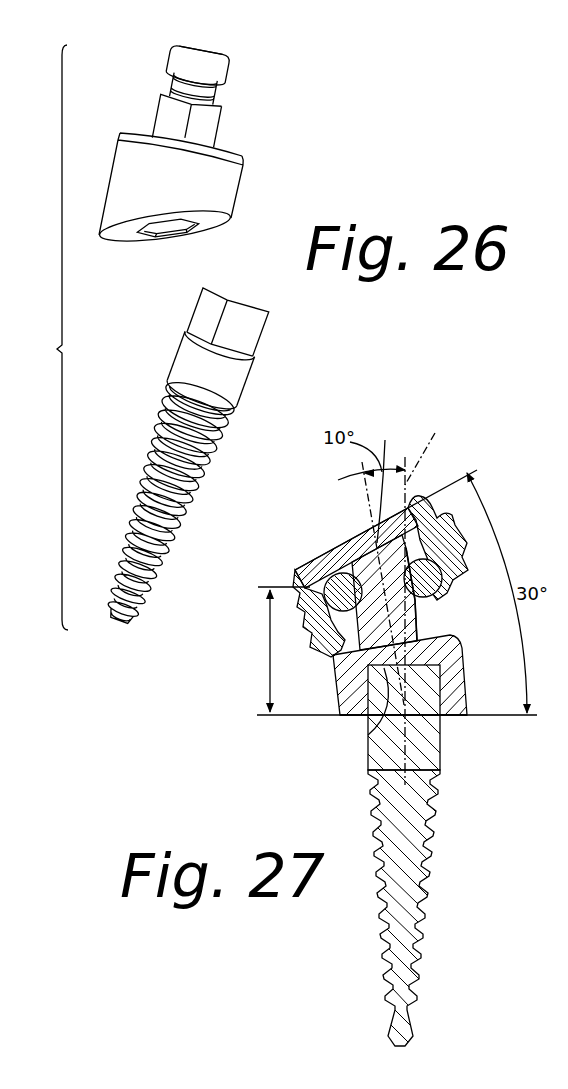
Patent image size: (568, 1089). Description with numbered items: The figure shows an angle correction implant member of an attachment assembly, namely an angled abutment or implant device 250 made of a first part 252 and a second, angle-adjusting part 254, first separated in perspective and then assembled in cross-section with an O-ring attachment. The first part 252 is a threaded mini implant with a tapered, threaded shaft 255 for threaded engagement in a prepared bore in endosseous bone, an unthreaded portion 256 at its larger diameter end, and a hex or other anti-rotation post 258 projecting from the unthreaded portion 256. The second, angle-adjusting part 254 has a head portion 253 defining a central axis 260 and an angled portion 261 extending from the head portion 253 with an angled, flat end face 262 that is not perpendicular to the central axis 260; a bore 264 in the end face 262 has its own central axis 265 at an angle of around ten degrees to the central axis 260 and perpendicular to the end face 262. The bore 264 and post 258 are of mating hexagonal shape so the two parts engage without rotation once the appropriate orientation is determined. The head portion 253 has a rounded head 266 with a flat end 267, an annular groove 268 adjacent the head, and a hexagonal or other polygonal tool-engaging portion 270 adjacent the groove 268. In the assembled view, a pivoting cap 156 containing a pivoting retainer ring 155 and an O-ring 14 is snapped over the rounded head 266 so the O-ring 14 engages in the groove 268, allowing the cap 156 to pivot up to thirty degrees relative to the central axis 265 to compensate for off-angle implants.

In FIG. 27, the O-ring 14 is at (327, 635).
In FIG. 27, the retainer ring 155 is at (317, 568).
In FIG. 27, the pivoting cap 156 is at (412, 518).
In FIG. 26, the angled abutment or implant device 250 is at (44, 337).
In FIG. 26, the first part 252 is at (200, 460).
In FIG. 27, the first part 252 is at (445, 908).
In FIG. 26, the head portion 253 is at (218, 126).
In FIG. 27, the head portion 253 is at (420, 622).
In FIG. 26, the second, angle-adjusting part 254 is at (204, 147).
In FIG. 26, the tapered, threaded shaft 255 is at (210, 497).
In FIG. 27, the tapered, threaded shaft 255 is at (430, 888).
In FIG. 26, the unthreaded portion 256 is at (209, 374).
In FIG. 26, the anti-rotation post 258 is at (227, 323).
In FIG. 27, the anti-rotation post 258 is at (425, 692).
In FIG. 27, the central axis 260 is at (366, 507).
In FIG. 26, the angled portion 261 is at (171, 184).
In FIG. 27, the angled portion 261 is at (460, 664).
In FIG. 26, the angled, flat end face 262 is at (165, 226).
In FIG. 27, the angled, flat end face 262 is at (458, 717).
In FIG. 26, the bore 264 is at (167, 228).
In FIG. 27, the bore 264 is at (383, 693).
In FIG. 27, the central axis of bore 265 is at (431, 450).
In FIG. 26, the rounded head 266 is at (197, 67).
In FIG. 27, the rounded head 266 is at (450, 537).
In FIG. 26, the flat end 267 is at (200, 50).
In FIG. 27, the flat end 267 is at (386, 480).
In FIG. 26, the annular groove 268 is at (194, 89).
In FIG. 26, the tool-engaging portion 270 is at (186, 121).
In FIG. 27, the tool-engaging portion 270 is at (367, 638).